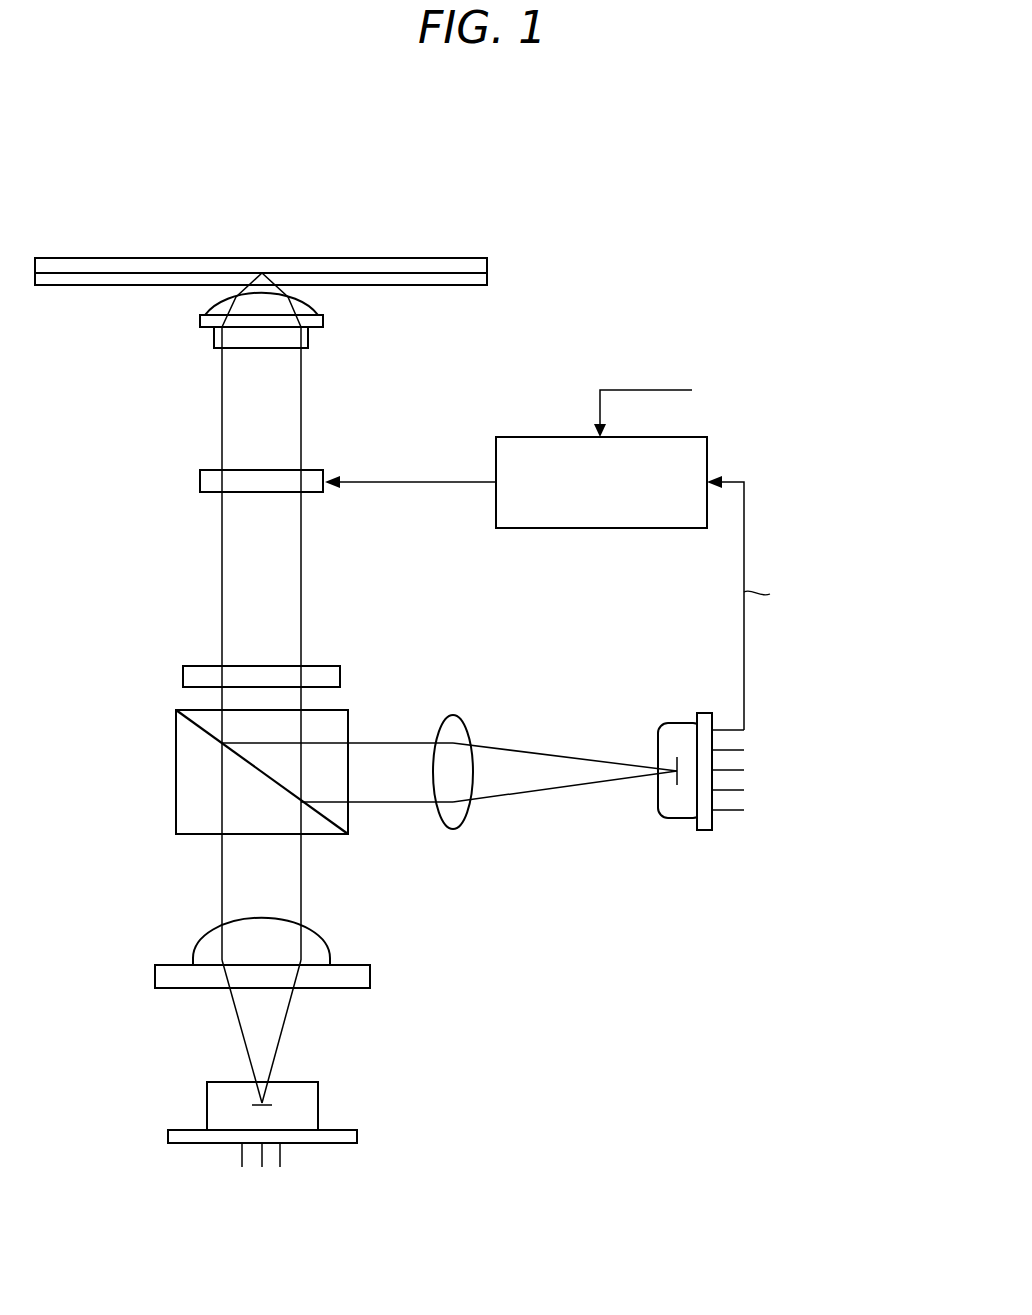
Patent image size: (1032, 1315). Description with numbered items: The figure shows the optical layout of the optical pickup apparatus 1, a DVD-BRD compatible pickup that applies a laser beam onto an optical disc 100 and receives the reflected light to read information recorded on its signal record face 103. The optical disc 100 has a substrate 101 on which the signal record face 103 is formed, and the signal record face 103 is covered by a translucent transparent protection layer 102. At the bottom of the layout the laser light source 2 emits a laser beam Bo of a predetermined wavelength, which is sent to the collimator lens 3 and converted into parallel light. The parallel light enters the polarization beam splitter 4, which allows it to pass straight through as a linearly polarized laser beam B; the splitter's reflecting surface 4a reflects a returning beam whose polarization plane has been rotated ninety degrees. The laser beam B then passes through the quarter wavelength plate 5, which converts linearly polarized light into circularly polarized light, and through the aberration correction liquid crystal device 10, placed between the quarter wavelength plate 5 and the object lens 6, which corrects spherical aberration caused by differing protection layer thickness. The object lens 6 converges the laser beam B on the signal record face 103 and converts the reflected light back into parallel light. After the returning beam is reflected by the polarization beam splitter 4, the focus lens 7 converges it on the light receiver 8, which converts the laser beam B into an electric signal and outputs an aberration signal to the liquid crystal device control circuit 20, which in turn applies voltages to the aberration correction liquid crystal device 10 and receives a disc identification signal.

The optical pickup apparatus 1 is at (536, 178).
The optical disc 100 is at (414, 250).
The substrate 101 is at (482, 264).
The transparent protection layer 102 is at (482, 281).
The signal record face 103 is at (440, 276).
The object lens 6 is at (310, 338).
The aberration correction liquid crystal device 10 is at (322, 470).
The laser beam B is at (301, 570).
The quarter wavelength plate 5 is at (340, 676).
The polarization beam splitter 4 is at (338, 720).
The reflecting surface of beam splitter 4a is at (338, 818).
The laser beam Bo is at (301, 882).
The focus lens 7 is at (453, 830).
The light receiver 8 is at (675, 725).
The collimator lens 3 is at (355, 977).
The laser light source 2 is at (305, 1108).
The liquid crystal device control circuit 20 is at (564, 437).